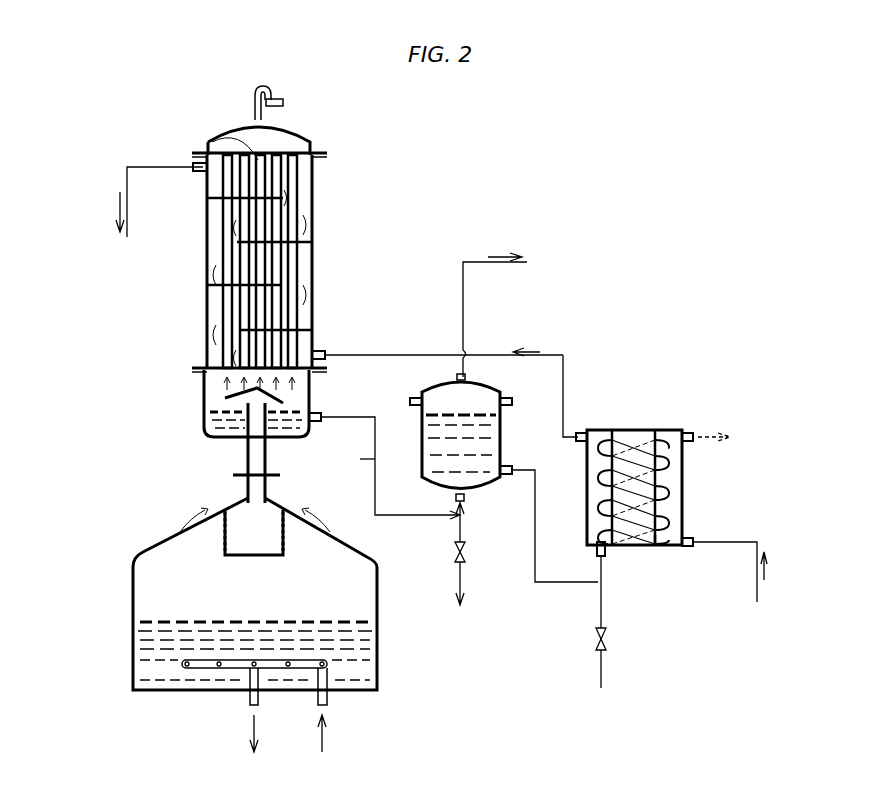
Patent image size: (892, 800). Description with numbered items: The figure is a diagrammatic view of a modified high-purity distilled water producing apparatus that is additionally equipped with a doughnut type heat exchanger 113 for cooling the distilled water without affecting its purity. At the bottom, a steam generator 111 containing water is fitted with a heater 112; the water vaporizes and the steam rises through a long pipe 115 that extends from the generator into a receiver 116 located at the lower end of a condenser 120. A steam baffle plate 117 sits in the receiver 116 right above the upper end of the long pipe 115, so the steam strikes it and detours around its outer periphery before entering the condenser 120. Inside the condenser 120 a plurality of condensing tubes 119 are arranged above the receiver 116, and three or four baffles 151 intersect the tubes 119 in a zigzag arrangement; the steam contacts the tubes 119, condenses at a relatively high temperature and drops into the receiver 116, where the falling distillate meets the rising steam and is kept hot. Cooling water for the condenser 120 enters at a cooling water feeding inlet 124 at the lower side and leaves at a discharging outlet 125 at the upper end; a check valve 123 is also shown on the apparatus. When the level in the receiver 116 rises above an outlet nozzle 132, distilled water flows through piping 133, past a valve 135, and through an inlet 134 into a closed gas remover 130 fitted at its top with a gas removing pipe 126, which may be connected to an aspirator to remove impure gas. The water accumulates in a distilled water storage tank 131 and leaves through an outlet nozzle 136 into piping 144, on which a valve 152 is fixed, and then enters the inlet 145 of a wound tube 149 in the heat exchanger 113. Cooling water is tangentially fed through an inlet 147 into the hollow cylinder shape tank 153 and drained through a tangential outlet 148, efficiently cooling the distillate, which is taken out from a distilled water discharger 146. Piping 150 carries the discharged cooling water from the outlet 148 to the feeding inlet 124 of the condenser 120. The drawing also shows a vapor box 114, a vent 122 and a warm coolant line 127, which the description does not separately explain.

The steam generator 111 is at (264, 607).
The heater 112 is at (207, 668).
The doughnut type heat exchanger 113 is at (694, 482).
The vapor box 114 is at (222, 528).
The long pipe 115 is at (246, 460).
The receiver 116 is at (204, 418).
The steam baffle plate 117 is at (225, 397).
The condensing tubes 119 is at (206, 130).
The condenser 120 is at (312, 197).
The vent 122 is at (255, 92).
The check valve 123 is at (284, 100).
The cooling water feeding inlet 124 is at (320, 351).
The discharging outlet 125 is at (193, 164).
The gas removing pipe 126 is at (463, 262).
The warm coolant line 127 is at (127, 202).
The gas remover 130 is at (468, 377).
The distilled water storage tank 131 is at (488, 405).
The outlet nozzle 132 is at (320, 413).
The piping 133 is at (375, 473).
The inlet 134 is at (462, 503).
The valve 135 is at (468, 553).
The outlet nozzle 136 is at (505, 476).
The piping 144 is at (535, 583).
The inlet 145 is at (606, 556).
The distilled water discharger 146 is at (690, 433).
The tangential feeding water inlet 147 is at (692, 540).
The tangential draining water outlet 148 is at (582, 432).
The wound tube 149 is at (630, 437).
The piping 150 is at (563, 358).
The baffles 151 is at (312, 242).
The valve 152 is at (605, 640).
The hollow cylinder shape tank 153 is at (660, 545).